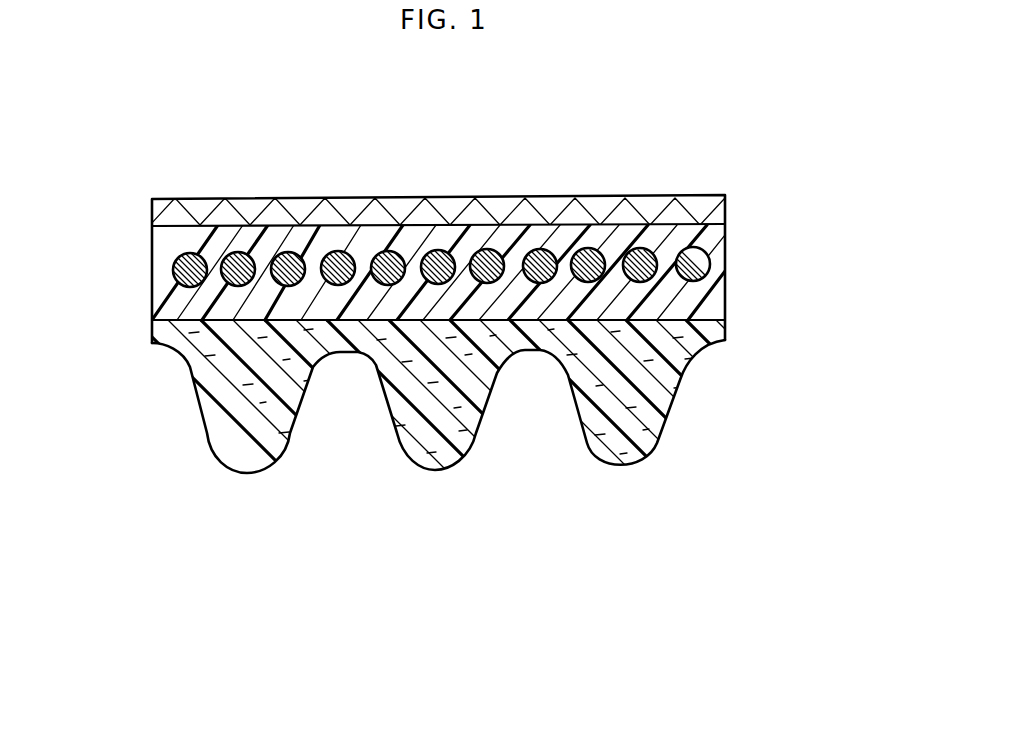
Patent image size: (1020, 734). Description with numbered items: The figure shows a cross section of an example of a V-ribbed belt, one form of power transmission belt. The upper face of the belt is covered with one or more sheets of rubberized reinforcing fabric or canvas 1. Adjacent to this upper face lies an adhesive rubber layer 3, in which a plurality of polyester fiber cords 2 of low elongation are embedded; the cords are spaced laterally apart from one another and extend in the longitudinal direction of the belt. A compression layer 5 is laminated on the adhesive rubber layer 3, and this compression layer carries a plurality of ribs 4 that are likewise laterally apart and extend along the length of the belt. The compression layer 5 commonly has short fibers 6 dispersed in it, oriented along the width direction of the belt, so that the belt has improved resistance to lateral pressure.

The rubberized reinforcing fabric or canvas 1 is at (624, 206).
The polyester fiber cords 2 is at (238, 253).
The adhesive rubber layer 3 is at (687, 232).
The ribs 4 is at (645, 433).
The compression layer 5 is at (689, 377).
The short fibers 6 is at (228, 402).